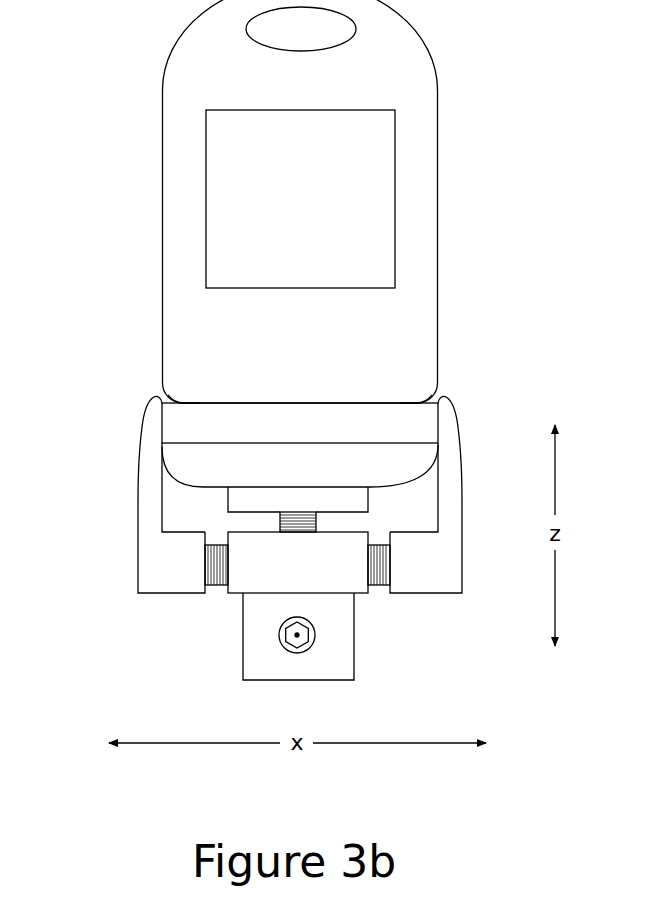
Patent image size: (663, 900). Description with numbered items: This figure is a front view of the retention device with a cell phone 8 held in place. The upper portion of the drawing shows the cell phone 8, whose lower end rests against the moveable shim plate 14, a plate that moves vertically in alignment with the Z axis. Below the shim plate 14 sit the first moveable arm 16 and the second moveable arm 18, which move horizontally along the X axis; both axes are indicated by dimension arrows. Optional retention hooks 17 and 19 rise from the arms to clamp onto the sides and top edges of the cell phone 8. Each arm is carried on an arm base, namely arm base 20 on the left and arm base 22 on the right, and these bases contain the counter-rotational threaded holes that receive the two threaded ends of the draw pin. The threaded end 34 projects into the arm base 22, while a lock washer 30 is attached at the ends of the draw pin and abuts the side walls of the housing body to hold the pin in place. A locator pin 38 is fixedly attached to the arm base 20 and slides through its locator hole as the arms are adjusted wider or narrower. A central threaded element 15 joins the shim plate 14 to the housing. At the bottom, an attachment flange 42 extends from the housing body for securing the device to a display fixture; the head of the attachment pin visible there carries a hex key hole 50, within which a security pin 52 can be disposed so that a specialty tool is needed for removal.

The cell phone 8 is at (175, 162).
The shim plate 14 is at (298, 497).
The threaded fastener 15 is at (292, 510).
The first moveable arm 16 is at (152, 443).
The retention hook 17 is at (180, 402).
The second moveable arm 18 is at (447, 435).
The retention hook 19 is at (422, 402).
The arm base 20 is at (138, 572).
The arm base 22 is at (463, 572).
The lock washer 30 is at (222, 540).
The threaded end 34 is at (380, 587).
The locator pin 38 is at (212, 587).
The attachment flange 42 is at (335, 665).
The hex key hole 50 is at (284, 645).
The security pin 52 is at (297, 639).